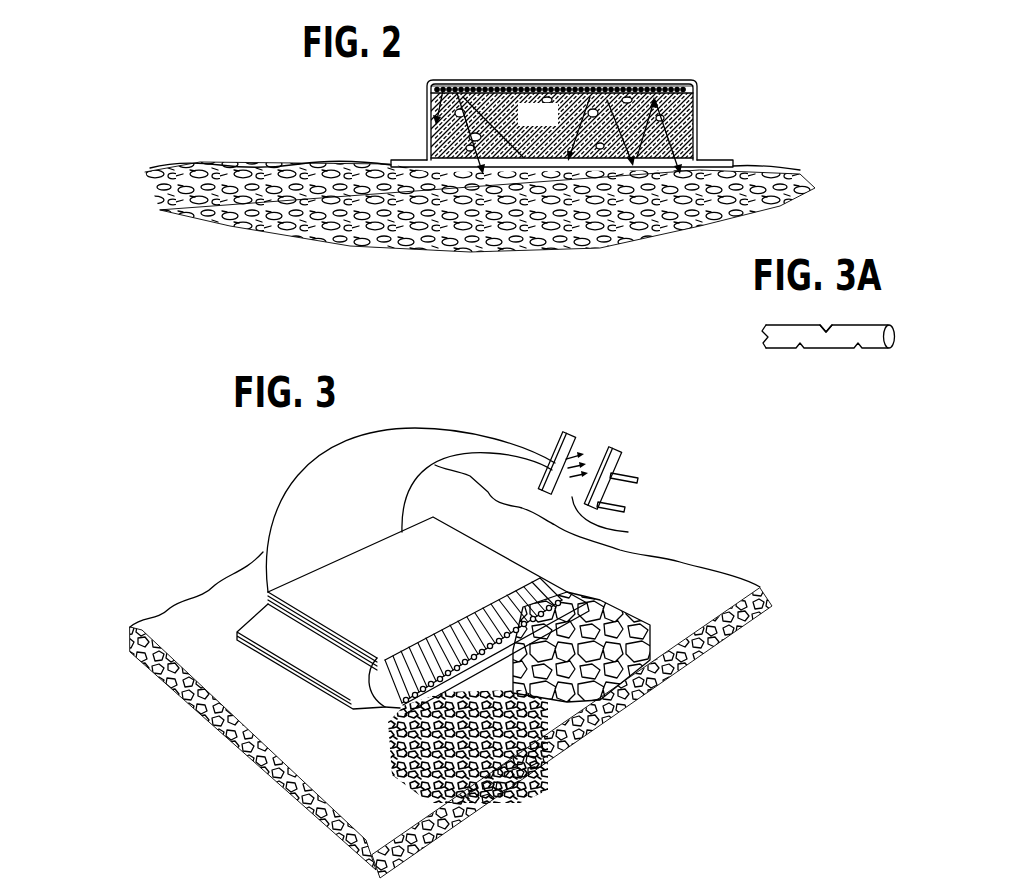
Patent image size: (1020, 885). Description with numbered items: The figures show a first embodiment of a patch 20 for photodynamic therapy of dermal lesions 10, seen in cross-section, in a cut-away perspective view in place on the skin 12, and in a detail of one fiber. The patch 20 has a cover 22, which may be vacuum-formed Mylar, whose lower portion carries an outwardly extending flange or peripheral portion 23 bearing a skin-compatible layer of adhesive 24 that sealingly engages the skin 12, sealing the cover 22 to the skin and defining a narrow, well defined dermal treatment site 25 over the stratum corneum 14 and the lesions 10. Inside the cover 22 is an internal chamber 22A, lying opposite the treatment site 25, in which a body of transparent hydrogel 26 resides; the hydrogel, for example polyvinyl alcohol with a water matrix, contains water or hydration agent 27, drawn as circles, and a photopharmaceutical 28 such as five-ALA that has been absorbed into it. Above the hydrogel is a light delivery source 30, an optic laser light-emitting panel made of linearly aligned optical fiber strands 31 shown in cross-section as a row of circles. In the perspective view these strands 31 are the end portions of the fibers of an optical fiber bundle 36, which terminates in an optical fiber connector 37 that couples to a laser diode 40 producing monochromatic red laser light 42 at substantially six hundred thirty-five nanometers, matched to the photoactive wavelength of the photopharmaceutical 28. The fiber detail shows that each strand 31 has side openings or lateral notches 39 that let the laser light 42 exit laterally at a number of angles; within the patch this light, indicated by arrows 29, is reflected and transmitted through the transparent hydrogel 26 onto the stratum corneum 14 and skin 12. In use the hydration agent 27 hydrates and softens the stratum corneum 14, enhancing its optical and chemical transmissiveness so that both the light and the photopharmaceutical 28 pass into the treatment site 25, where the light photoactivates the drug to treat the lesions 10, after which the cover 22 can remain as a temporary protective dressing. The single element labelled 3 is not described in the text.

In FIG. 3A, the tube 3 is at (886, 348).
In FIG. 2, the dermal lesions 10 is at (686, 257).
In FIG. 3, the dermal lesions 10 is at (620, 717).
In FIG. 2, the skin 12 is at (797, 194).
In FIG. 3, the skin 12 is at (765, 594).
In FIG. 2, the stratum corneum 14 is at (290, 165).
In FIG. 3, the stratum corneum 14 is at (680, 565).
In FIG. 2, the patch 20 is at (637, 81).
In FIG. 3, the patch 20 is at (350, 607).
In FIG. 2, the cover 22 is at (436, 79).
In FIG. 3, the cover 22 is at (280, 628).
In FIG. 2, the internal chamber 22A is at (520, 126).
In FIG. 2, the flange or peripheral portion 23 is at (395, 160).
In FIG. 2, the layer of adhesive 24 is at (392, 165).
In FIG. 2, the dermal treatment site 25 is at (571, 87).
In FIG. 2, the transparent hydrogel 26 is at (697, 81).
In FIG. 2, the water or hydration agent 27 is at (425, 92).
In FIG. 2, the photopharmaceutical 28 is at (430, 118).
In FIG. 2, the arrows indicating laser light 29 is at (462, 87).
In FIG. 2, the light delivery source 30 is at (595, 88).
In FIG. 2, the optical fiber strands 31 is at (520, 82).
In FIG. 3, the optical fiber strands 31 is at (448, 626).
In FIG. 3, the optical fiber bundle 36 is at (295, 468).
In FIG. 3, the optical fiber connector 37 is at (560, 437).
In FIG. 3A, the side openings or lateral notches 39 is at (826, 330).
In FIG. 3, the laser diode 40 is at (607, 452).
In FIG. 3, the laser light 42 is at (612, 532).